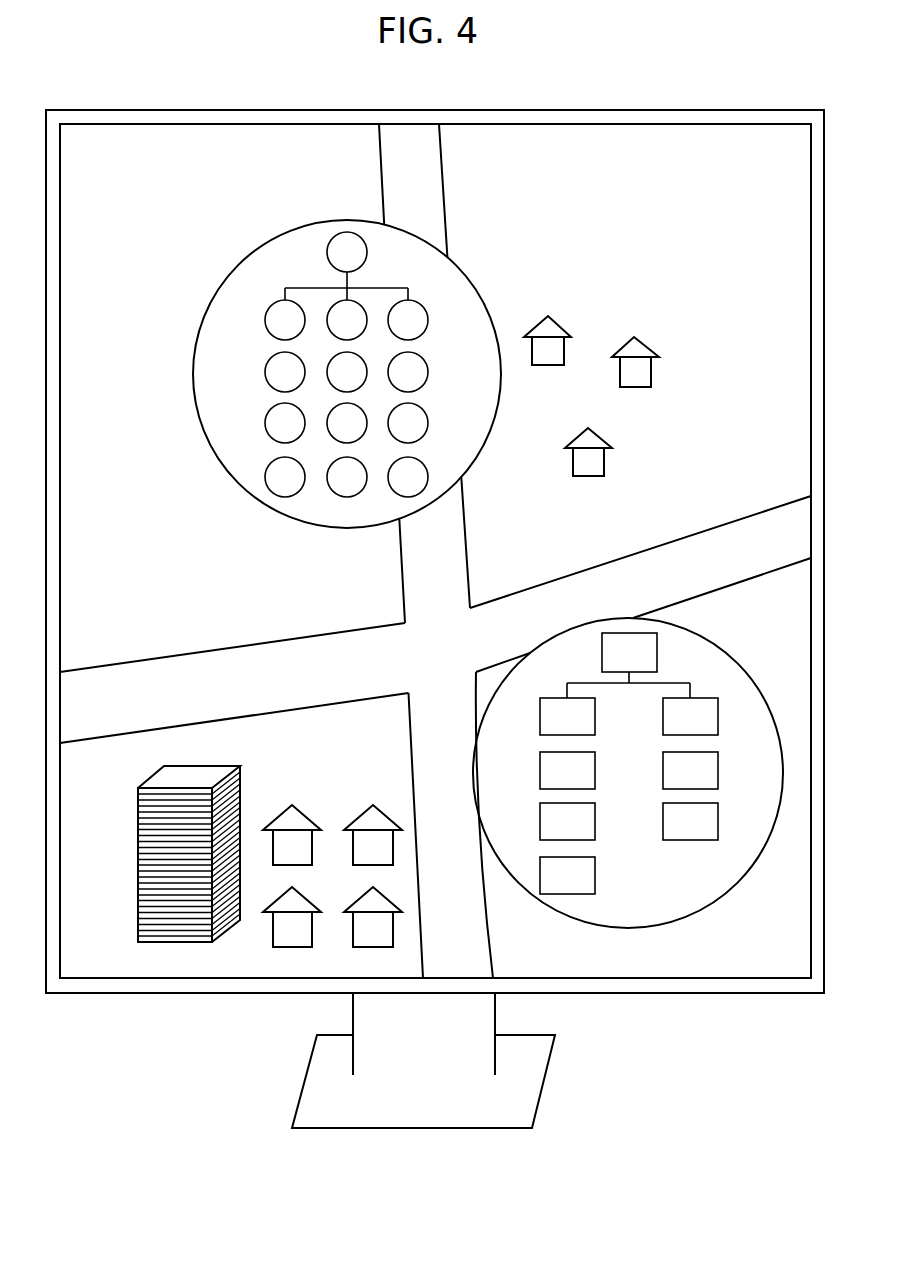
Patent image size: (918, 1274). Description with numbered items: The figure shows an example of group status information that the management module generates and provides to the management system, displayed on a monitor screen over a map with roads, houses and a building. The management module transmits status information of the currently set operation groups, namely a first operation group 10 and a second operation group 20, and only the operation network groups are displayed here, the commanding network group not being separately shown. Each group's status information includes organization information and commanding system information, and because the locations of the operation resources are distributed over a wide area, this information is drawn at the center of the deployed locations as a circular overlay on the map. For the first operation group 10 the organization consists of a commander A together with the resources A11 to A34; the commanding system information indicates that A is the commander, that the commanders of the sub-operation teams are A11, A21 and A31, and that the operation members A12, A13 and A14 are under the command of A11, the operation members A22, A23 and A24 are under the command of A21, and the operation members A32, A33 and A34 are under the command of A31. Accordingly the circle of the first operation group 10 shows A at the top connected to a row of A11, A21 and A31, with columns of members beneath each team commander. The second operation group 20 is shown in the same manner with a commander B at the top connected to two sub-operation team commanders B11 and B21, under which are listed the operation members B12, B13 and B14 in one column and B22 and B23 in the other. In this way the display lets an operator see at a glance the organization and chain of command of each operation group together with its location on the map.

The first operation group 10 is at (233, 268).
The second operation group 20 is at (722, 651).
The commander A is at (347, 252).
The sub-operation team commander A11 is at (285, 320).
The sub-operation team commander A21 is at (347, 320).
The sub-operation team commander A31 is at (408, 320).
The operation member A12 is at (285, 372).
The operation member A22 is at (347, 372).
The operation member A32 is at (408, 372).
The operation member A13 is at (285, 423).
The operation member A23 is at (347, 423).
The operation member A33 is at (408, 423).
The operation member A14 is at (285, 477).
The operation member A24 is at (347, 477).
The operation member A34 is at (408, 477).
The commander B is at (629, 652).
The sub-operation team commander B11 is at (567, 716).
The sub-operation team commander B21 is at (690, 716).
The operation member B12 is at (567, 770).
The operation member B22 is at (690, 770).
The operation member B13 is at (567, 821).
The operation member B23 is at (690, 821).
The operation member B14 is at (567, 875).